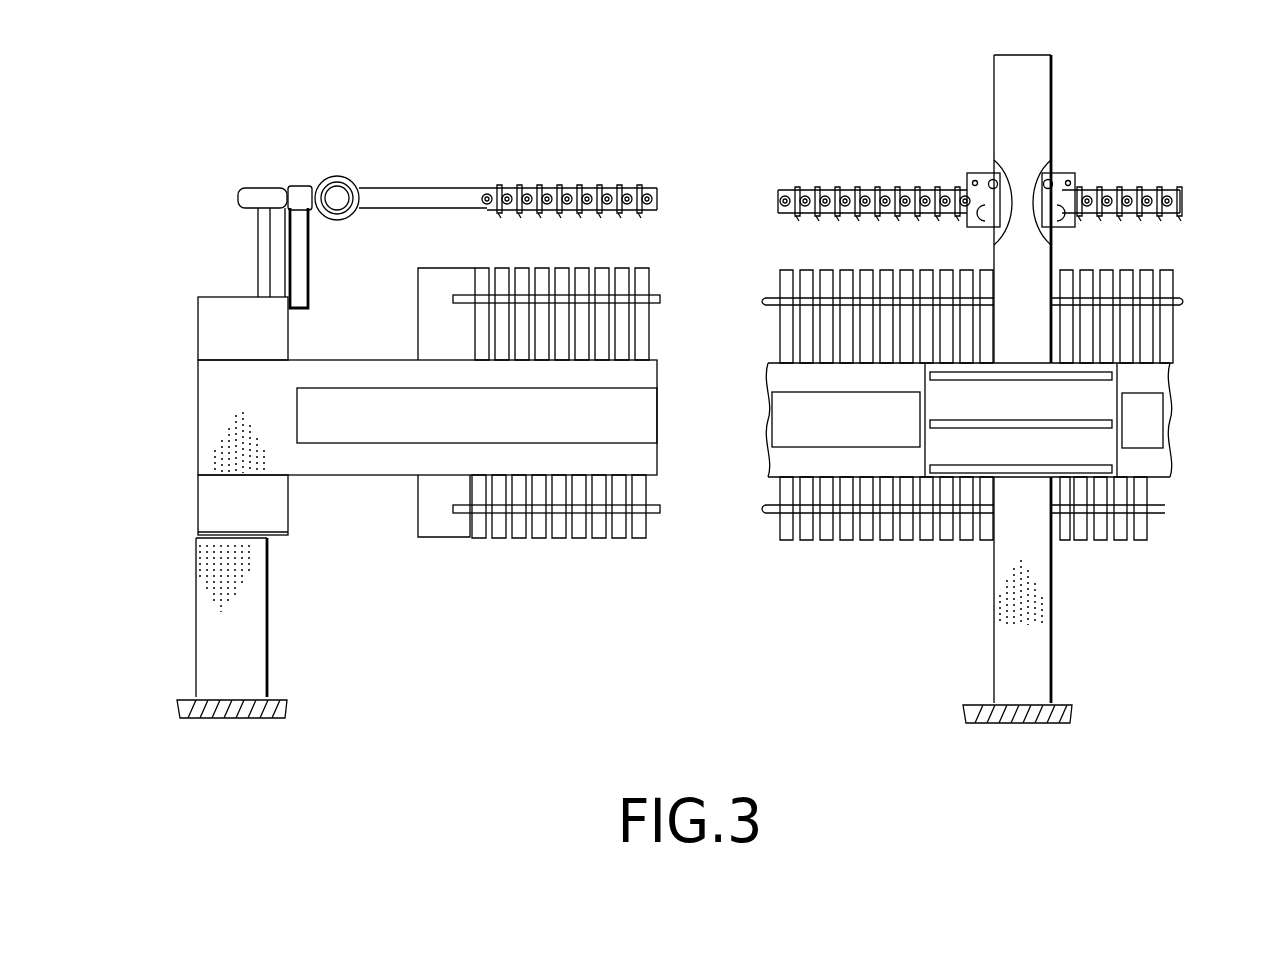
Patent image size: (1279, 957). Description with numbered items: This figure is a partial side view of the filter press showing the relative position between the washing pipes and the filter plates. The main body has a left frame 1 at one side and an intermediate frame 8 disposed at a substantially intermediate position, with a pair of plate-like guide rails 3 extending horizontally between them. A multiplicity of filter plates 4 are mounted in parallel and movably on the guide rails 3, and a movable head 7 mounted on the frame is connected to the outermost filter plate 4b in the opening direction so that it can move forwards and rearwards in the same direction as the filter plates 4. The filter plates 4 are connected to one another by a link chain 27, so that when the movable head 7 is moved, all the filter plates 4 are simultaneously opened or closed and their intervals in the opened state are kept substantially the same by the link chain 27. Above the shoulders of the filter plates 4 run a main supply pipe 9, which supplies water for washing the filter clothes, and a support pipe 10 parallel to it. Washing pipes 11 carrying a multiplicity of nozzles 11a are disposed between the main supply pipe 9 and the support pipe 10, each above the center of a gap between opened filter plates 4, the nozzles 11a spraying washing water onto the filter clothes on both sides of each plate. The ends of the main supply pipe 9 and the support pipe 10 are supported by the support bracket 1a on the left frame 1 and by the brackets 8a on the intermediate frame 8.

The left frame 1 is at (242, 647).
The support bracket 1a is at (295, 257).
The guide rails 3 is at (205, 420).
The filter plates 4 is at (603, 538).
The outermost filter plate 4b is at (480, 538).
The movable head 7 is at (438, 530).
The intermediate frame 8 is at (1048, 647).
The brackets 8a is at (973, 173).
The main supply pipe 9 is at (452, 187).
The support pipe 10 is at (267, 187).
The washing pipes 11 is at (583, 190).
The nozzles 11a is at (518, 213).
The link chain 27 is at (617, 298).